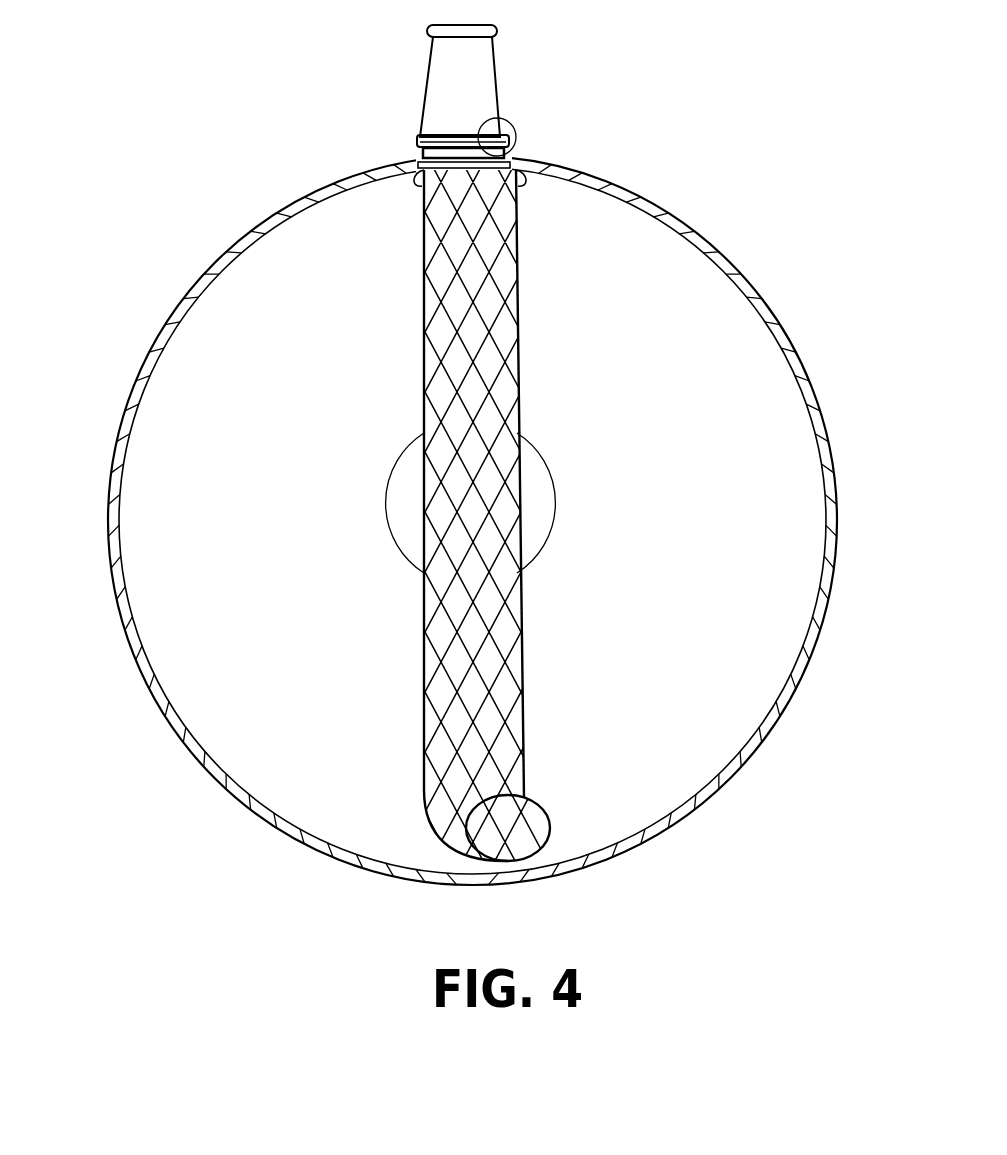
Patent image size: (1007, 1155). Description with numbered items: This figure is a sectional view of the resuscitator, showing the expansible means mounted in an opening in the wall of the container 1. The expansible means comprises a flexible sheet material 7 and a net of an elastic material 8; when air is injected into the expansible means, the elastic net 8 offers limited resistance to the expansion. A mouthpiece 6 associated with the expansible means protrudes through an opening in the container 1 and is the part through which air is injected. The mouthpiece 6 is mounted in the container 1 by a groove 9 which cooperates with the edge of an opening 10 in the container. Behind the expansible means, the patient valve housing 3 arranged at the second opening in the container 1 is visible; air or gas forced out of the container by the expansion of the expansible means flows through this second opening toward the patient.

The container 1 is at (832, 462).
The patient valve housing 3 is at (385, 510).
The mouthpiece 6 is at (463, 83).
The flexible sheet material 7 is at (503, 515).
The net of an elastic material 8 is at (490, 283).
The groove 9 is at (425, 140).
The opening 10 is at (498, 113).